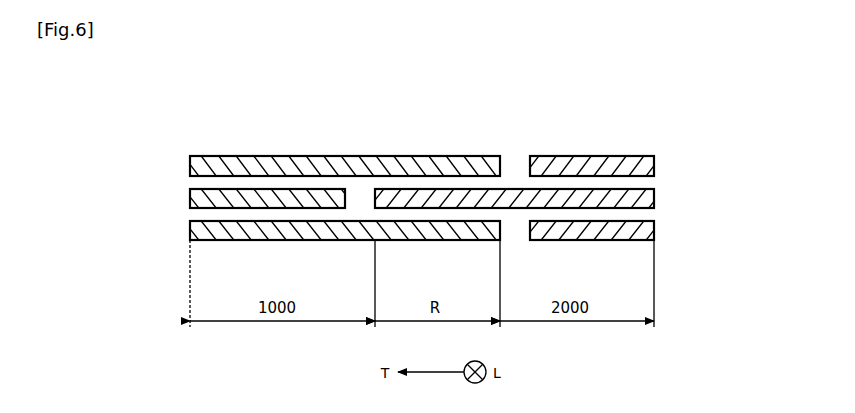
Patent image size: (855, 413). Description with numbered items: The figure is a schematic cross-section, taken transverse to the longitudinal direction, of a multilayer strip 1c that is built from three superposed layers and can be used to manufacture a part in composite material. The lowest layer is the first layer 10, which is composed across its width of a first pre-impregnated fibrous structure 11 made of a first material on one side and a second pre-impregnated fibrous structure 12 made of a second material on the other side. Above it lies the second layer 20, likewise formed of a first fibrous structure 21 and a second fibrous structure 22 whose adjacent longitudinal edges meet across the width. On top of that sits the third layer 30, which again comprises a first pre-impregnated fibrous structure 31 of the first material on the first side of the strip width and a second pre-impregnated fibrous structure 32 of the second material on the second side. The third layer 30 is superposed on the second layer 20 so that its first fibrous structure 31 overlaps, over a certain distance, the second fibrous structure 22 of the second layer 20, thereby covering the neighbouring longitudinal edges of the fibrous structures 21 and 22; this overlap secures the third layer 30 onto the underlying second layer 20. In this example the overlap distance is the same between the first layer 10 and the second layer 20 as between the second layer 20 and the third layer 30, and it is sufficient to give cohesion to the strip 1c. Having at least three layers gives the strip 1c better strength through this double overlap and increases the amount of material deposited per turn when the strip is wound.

The multilayer strip 1c is at (444, 178).
The first layer 10 is at (465, 249).
The first pre-impregnated fibrous structure of the first layer 11 is at (345, 240).
The second pre-impregnated fibrous structure of the first layer 12 is at (600, 240).
The second layer 20 is at (444, 162).
The first fibrous structure of the second layer 21 is at (197, 193).
The second fibrous structure of the second layer 22 is at (515, 189).
The third layer 30 is at (465, 146).
The first pre-impregnated fibrous structure of the third layer 31 is at (333, 156).
The second pre-impregnated fibrous structure of the third layer 32 is at (587, 165).